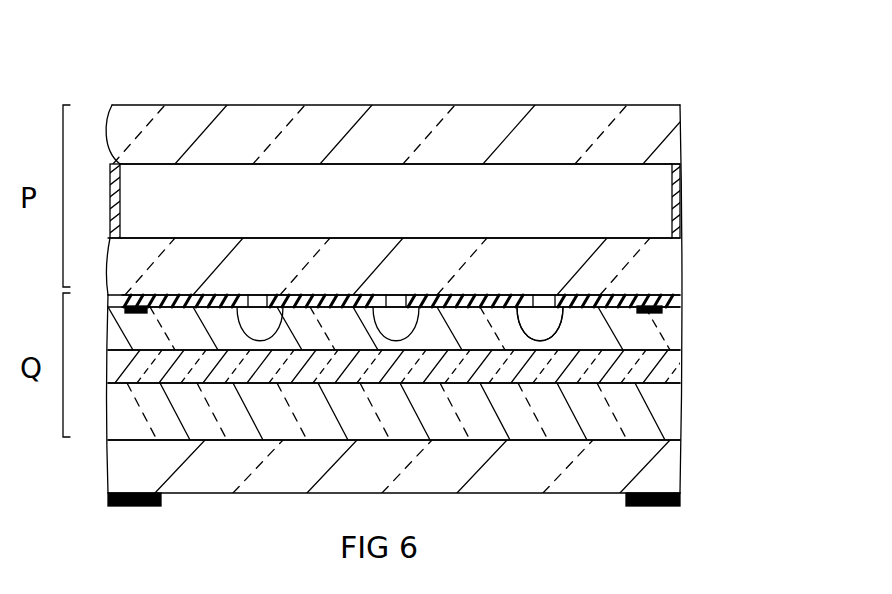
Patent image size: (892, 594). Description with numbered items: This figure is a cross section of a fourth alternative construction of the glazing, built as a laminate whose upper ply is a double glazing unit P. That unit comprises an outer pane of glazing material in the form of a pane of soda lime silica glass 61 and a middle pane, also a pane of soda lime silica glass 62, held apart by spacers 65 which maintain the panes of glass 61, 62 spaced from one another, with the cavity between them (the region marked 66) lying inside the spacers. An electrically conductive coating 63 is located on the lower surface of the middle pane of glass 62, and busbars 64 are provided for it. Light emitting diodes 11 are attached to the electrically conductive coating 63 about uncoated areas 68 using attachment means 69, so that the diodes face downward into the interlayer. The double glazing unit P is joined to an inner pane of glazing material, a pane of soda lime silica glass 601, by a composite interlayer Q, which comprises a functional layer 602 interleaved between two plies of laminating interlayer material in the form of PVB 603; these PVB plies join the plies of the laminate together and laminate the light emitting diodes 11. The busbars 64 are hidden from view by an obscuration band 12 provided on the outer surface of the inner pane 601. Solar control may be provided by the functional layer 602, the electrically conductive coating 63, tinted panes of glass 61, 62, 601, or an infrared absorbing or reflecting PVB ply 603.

The outer pane of glazing material 61 is at (652, 127).
The middle pane of glazing material 62 is at (657, 265).
The electrically conductive coating 63 is at (513, 296).
The busbars 64 is at (663, 314).
The spacers 65 is at (122, 172).
The liquid crystal layer 66 is at (257, 197).
The uncoated areas 68 is at (548, 296).
The attachment means 69 is at (568, 300).
The light emitting diodes 11 is at (542, 330).
The inner pane of glazing material 601 is at (660, 472).
The functional layer 602 is at (670, 368).
The PVB 603 is at (668, 332).
The obscuration band 12 is at (130, 508).